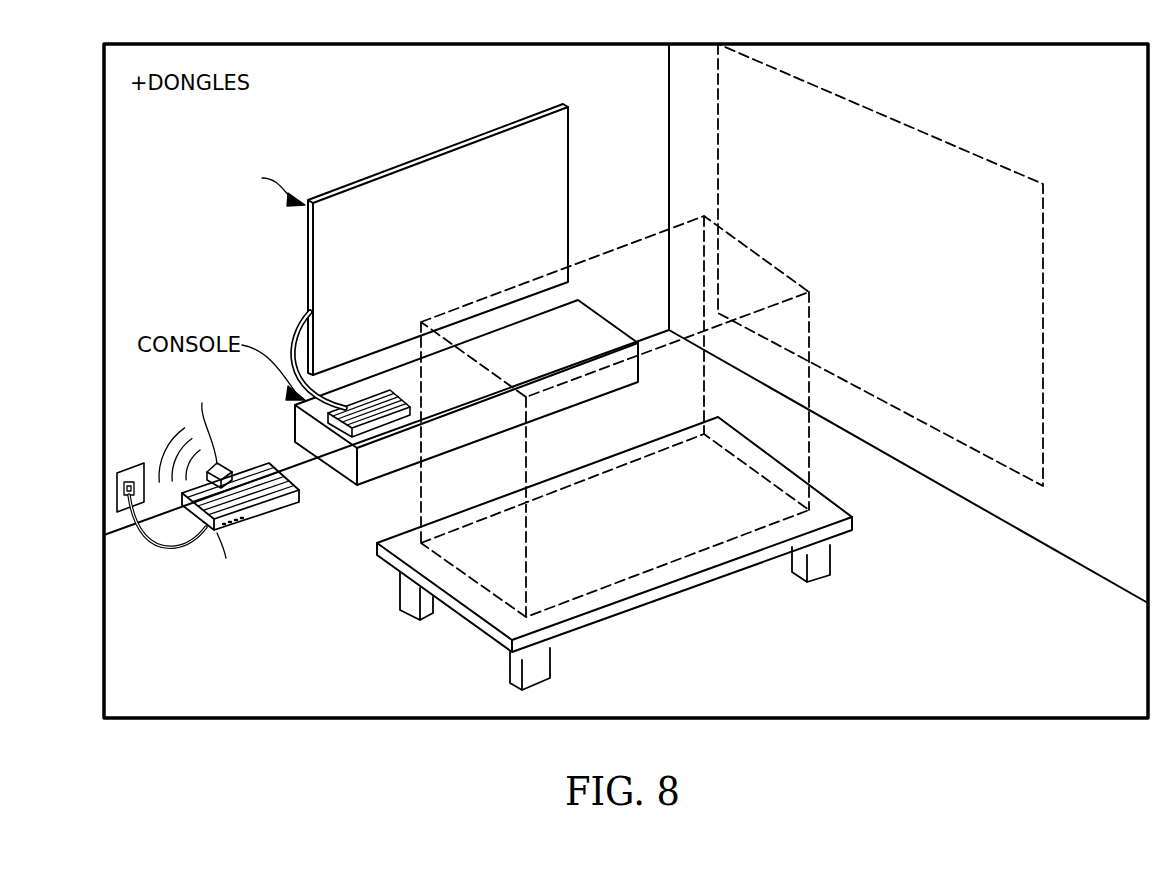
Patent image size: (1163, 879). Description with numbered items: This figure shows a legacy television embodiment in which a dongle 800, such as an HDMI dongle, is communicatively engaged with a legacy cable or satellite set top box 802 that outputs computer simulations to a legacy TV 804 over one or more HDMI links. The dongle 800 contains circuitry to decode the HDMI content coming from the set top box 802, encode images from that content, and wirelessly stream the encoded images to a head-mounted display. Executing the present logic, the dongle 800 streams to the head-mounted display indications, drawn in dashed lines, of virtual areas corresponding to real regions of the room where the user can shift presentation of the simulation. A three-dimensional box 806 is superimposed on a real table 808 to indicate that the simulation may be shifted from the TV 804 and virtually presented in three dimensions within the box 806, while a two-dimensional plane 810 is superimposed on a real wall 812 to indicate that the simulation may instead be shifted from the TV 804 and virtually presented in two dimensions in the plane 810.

The dongle 800 is at (232, 467).
The set top box 802 is at (267, 515).
The legacy TV 804 is at (440, 155).
The 3D box 806 is at (810, 463).
The table 808 is at (683, 593).
The 2D plane 810 is at (1043, 355).
The wall 812 is at (669, 135).